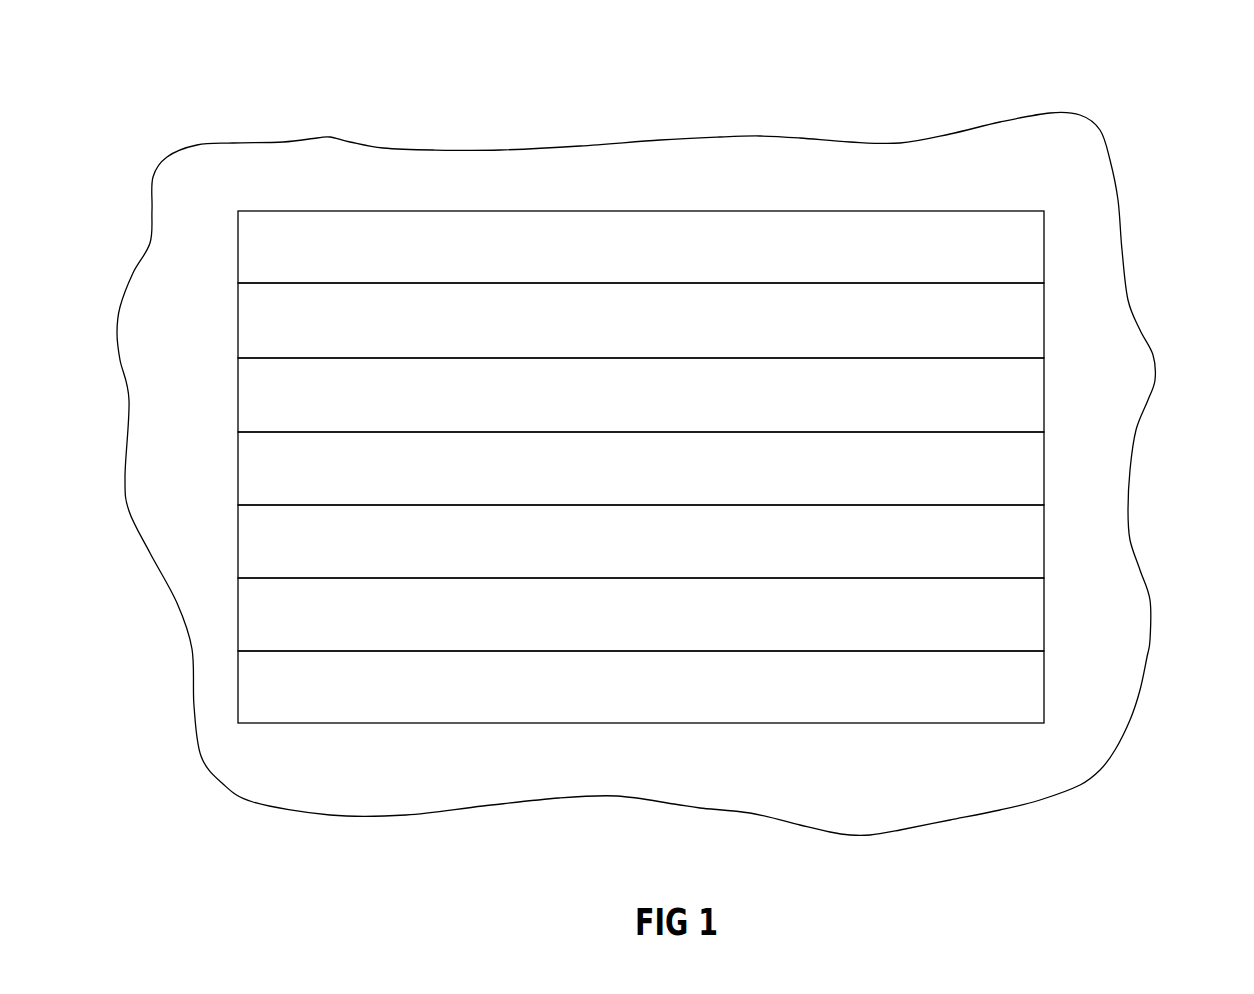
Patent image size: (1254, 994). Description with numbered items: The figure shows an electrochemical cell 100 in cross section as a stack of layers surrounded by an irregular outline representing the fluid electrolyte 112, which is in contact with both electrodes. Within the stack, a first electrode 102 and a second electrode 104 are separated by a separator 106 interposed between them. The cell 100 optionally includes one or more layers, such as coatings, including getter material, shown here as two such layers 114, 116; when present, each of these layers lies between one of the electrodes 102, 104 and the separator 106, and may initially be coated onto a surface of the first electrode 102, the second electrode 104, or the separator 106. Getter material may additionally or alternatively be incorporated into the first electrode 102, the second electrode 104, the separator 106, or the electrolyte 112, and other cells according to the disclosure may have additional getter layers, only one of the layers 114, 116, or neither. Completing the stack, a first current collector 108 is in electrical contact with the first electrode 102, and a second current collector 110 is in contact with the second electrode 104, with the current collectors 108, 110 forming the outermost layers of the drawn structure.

The electrochemical cell 100 is at (668, 425).
The fluid electrolyte 112 is at (587, 163).
The second current collector 110 is at (1025, 259).
The second electrode 104 is at (1025, 330).
The layer including getter material 116 is at (1025, 395).
The separator 106 is at (1025, 479).
The layer including getter material 114 is at (1025, 550).
The first electrode 102 is at (1025, 615).
The first current collector 108 is at (1025, 689).